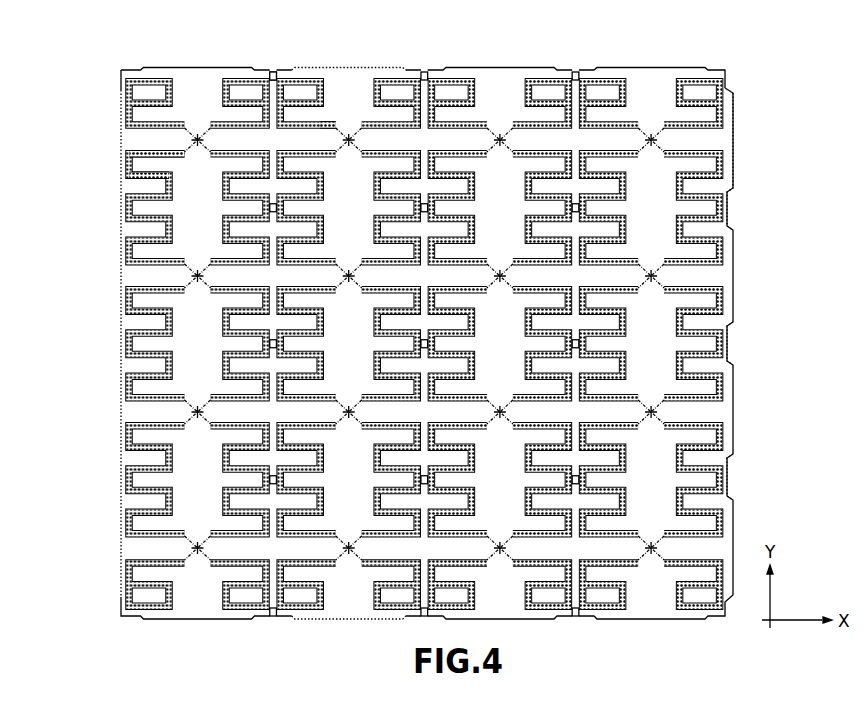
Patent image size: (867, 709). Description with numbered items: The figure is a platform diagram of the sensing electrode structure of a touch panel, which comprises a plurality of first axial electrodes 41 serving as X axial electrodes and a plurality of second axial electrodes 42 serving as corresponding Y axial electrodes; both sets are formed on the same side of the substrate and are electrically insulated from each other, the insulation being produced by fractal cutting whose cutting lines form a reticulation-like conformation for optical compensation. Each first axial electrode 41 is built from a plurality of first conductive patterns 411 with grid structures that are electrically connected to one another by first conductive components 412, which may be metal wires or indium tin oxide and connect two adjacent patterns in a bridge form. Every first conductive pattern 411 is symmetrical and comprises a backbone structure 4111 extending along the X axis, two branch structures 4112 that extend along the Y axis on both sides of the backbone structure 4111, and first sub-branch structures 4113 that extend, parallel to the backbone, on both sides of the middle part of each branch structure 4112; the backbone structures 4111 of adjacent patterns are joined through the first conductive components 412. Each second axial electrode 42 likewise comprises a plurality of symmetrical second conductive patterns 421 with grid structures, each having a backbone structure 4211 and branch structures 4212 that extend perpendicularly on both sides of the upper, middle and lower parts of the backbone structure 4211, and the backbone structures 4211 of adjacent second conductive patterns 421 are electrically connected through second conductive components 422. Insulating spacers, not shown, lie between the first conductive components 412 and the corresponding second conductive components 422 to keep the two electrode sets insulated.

The first axial electrode 41 is at (110, 140).
The second axial electrode 42 is at (183, 61).
The first conductive pattern with grid structure 411 is at (290, 150).
The first conductive component 412 is at (200, 125).
The backbone structure 4111 is at (333, 122).
The branch structure 4112 is at (276, 72).
The first sub-branch structure 4113 is at (248, 78).
The second conductive pattern with grid structure 421 is at (214, 218).
The backbone structure 4211 is at (192, 181).
The branch structure 4212 is at (140, 166).
The second conductive component 422 is at (350, 137).